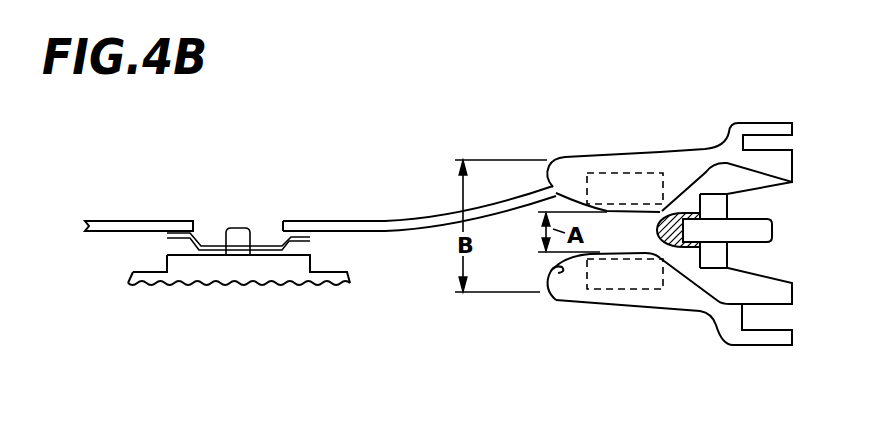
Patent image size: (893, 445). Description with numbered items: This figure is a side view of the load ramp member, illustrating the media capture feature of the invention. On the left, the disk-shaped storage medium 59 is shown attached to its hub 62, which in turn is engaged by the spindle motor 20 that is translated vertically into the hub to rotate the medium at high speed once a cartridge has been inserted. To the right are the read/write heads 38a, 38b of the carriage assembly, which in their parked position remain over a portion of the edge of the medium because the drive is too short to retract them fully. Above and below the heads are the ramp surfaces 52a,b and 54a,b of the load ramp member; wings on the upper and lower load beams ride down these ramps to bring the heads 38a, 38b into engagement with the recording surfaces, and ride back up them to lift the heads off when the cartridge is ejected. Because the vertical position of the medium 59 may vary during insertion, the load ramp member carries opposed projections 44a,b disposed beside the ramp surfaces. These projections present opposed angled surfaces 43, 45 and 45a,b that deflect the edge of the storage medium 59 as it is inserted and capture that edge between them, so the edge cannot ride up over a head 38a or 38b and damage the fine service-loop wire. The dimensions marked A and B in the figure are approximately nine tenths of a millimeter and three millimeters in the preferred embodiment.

The spindle motor 20 is at (210, 273).
The disk-shaped storage medium 59 is at (340, 220).
The hub 62 is at (198, 230).
The angled surface 45a,b is at (562, 158).
The read/write head 38a is at (628, 180).
The ramp surfaces 52a,b is at (692, 172).
The angled surface 43 is at (583, 203).
The angled surface 45 is at (553, 302).
The projections 44a,b is at (577, 295).
The read/write head 38b is at (658, 283).
The ramp surfaces 54a,b is at (707, 315).